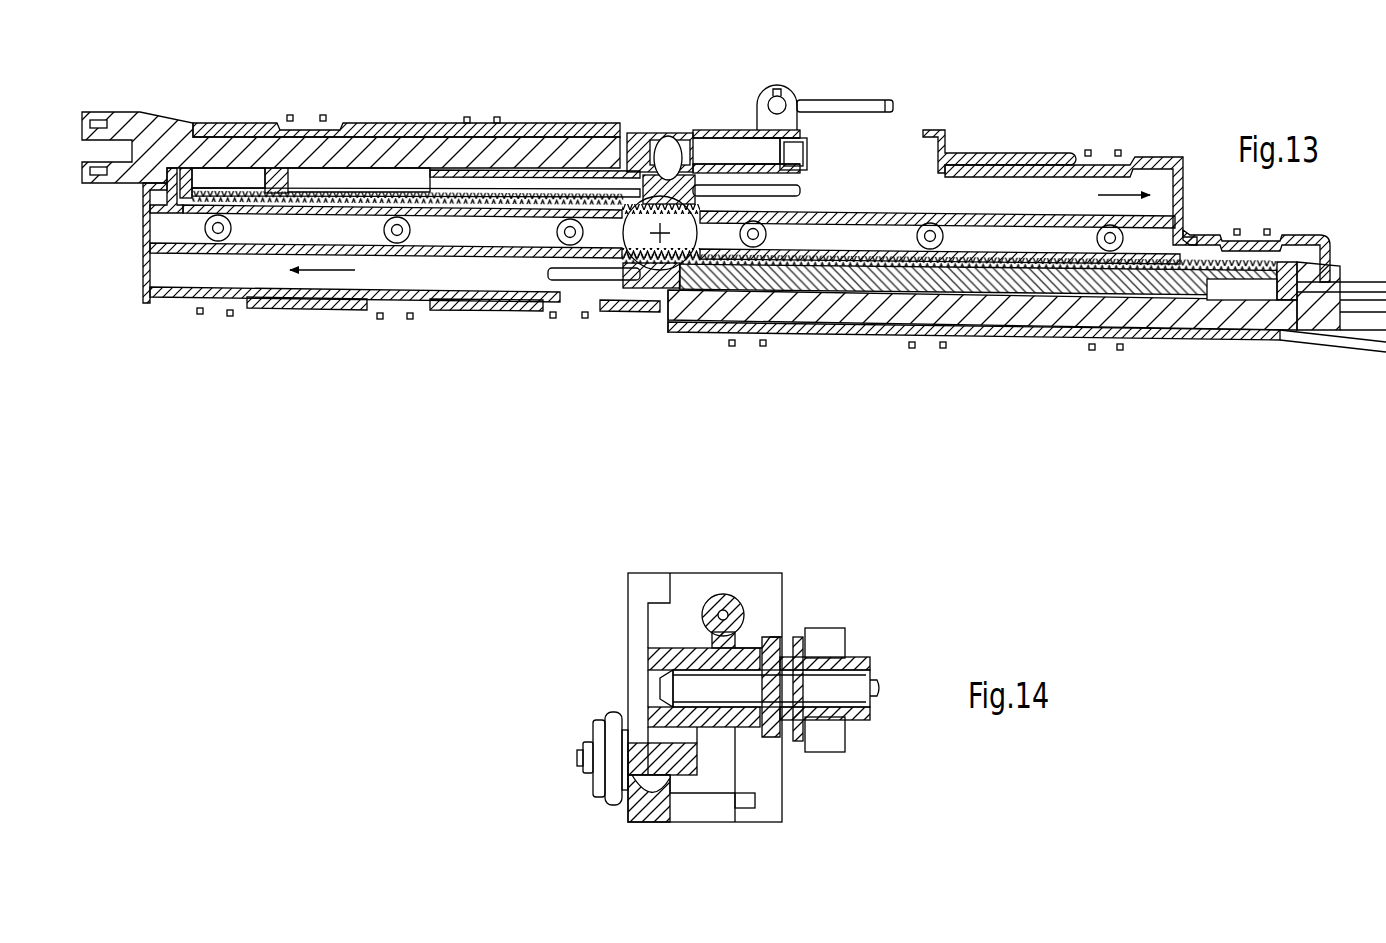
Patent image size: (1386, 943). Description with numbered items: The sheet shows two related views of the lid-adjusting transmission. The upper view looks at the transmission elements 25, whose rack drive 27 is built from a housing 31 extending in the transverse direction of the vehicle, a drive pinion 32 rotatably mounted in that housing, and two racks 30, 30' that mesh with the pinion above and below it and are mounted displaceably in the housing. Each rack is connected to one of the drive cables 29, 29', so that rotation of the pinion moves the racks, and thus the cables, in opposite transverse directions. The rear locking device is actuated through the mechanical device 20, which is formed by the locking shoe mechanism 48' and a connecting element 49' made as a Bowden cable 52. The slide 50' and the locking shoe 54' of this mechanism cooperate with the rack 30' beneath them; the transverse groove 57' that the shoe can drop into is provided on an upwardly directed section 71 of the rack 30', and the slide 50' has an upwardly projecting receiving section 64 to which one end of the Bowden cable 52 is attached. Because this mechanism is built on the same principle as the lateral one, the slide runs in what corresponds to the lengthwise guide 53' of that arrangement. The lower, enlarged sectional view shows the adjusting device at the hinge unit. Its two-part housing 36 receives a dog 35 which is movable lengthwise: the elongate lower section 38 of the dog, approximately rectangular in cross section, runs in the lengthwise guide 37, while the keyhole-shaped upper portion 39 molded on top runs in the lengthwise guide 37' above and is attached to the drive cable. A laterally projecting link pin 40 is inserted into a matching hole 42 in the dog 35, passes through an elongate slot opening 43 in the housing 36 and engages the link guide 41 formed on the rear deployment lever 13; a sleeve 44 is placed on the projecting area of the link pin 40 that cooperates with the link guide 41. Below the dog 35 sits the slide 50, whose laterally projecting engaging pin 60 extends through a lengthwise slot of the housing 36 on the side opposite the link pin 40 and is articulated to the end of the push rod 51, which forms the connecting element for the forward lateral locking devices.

In FIG. 13, the transmission elements 25 is at (518, 318).
In FIG. 13, the upwardly directed section 71 is at (590, 175).
In FIG. 13, the rack 30' is at (416, 129).
In FIG. 13, the drive pinion 32 is at (655, 242).
In FIG. 13, the locking shoe mechanism 48' is at (669, 117).
In FIG. 13, the locking shoe 54' is at (646, 113).
In FIG. 13, the transverse groove 57' is at (656, 127).
In FIG. 13, the tube 53' is at (746, 121).
In FIG. 13, the mechanical device 20 is at (752, 128).
In FIG. 13, the slide 50' is at (822, 147).
In FIG. 13, the receiving section 64 is at (785, 80).
In FIG. 13, the Bowden cable 52 is at (843, 100).
In FIG. 13, the connecting element 49' is at (922, 71).
In FIG. 13, the housing 31 is at (950, 133).
In FIG. 13, the drive cable 29' is at (786, 185).
In FIG. 13, the drive cable 29 is at (594, 322).
In FIG. 14, the drive cable 29 is at (737, 554).
In FIG. 13, the rack drive 27 is at (775, 318).
In FIG. 13, the rack 30 is at (1027, 333).
In FIG. 14, the housing 36 is at (764, 828).
In FIG. 14, the slide 50 is at (674, 805).
In FIG. 14, the lower section 38 is at (664, 645).
In FIG. 14, the dog 35 is at (684, 656).
In FIG. 14, the hole 42 is at (657, 697).
In FIG. 14, the lengthwise guide 37 is at (712, 679).
In FIG. 14, the upper portion 39 is at (711, 605).
In FIG. 14, the lengthwise guide 37' is at (792, 603).
In FIG. 14, the slot opening 43 is at (776, 722).
In FIG. 14, the deployment lever 13 is at (833, 635).
In FIG. 14, the link guide 41 is at (834, 730).
In FIG. 14, the sleeve 44 is at (862, 660).
In FIG. 14, the link pin 40 is at (878, 696).
In FIG. 14, the engaging pin 60 is at (574, 758).
In FIG. 14, the push rod 51 is at (608, 794).